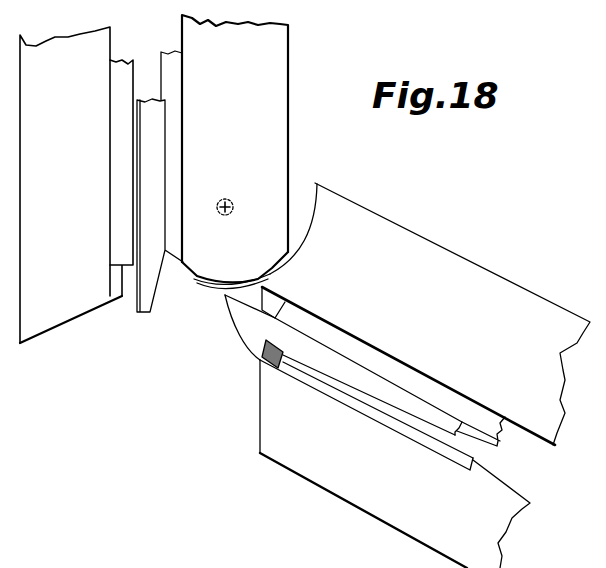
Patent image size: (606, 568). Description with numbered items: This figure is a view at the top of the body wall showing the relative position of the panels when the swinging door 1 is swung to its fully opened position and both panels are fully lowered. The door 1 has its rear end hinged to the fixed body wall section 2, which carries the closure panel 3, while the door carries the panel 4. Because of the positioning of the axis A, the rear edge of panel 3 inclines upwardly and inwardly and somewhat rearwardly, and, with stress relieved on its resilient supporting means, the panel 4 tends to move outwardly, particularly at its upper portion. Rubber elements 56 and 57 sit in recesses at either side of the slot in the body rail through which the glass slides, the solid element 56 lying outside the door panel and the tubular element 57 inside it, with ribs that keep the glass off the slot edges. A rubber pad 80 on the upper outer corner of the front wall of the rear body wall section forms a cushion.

The swinging door 1 is at (431, 253).
The fixed body wall section 2 is at (280, 134).
The closure panel 3 is at (384, 386).
The panel 4 is at (152, 188).
The rubber element 56 is at (118, 55).
The rubber element 57 is at (168, 75).
The rubber pad 80 is at (217, 286).
The axis A is at (232, 200).